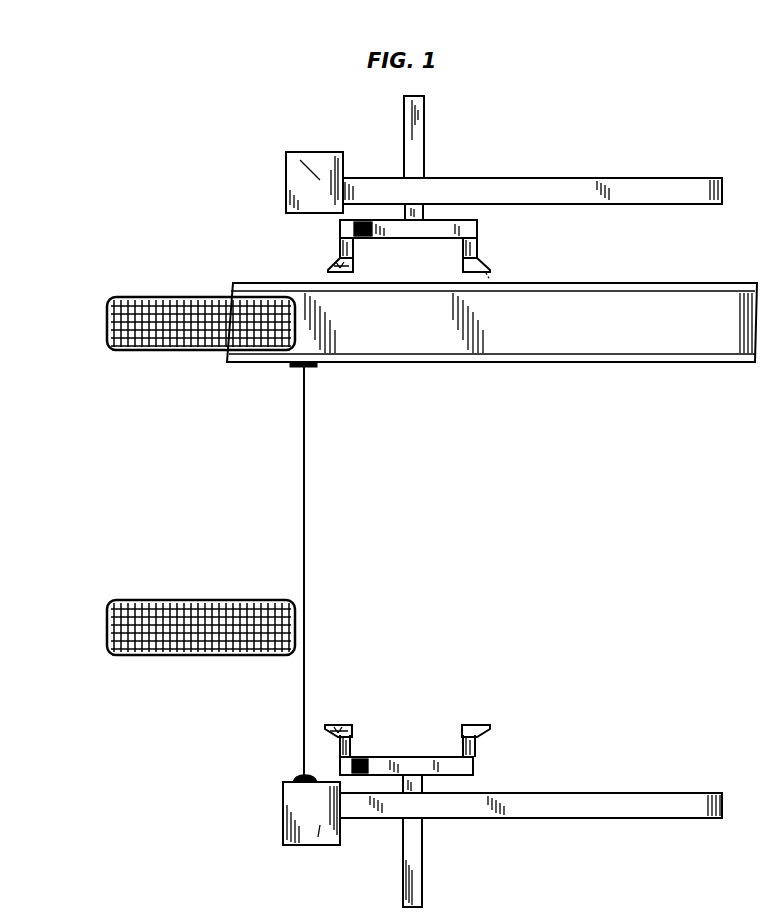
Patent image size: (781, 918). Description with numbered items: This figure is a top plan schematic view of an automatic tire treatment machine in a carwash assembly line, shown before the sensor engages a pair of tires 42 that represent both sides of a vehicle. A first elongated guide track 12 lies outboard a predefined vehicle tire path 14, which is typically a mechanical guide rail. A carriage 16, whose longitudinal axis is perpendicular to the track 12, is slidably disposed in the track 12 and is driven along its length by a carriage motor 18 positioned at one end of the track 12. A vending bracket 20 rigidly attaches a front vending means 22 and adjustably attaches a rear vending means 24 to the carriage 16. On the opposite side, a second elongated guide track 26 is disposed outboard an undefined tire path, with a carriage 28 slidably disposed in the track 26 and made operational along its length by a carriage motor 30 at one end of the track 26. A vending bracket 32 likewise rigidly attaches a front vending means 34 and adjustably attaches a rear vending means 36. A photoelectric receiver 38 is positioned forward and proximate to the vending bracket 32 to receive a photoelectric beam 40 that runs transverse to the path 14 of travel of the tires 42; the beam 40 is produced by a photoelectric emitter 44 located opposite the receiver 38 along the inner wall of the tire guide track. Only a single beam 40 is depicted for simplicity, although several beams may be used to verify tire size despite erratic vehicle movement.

The first elongated guide track 12 is at (685, 195).
The predefined vehicle tire path 14 is at (488, 363).
The carriage 16 is at (420, 105).
The carriage motor 18 is at (292, 152).
The vending bracket 20 is at (396, 250).
The front vending means 22 is at (495, 295).
The rear vending means 24 is at (327, 264).
The second elongated guide track 26 is at (628, 812).
The carriage 28 is at (422, 895).
The carriage motor 30 is at (318, 840).
The vending bracket 32 is at (434, 731).
The front vending means 34 is at (477, 723).
The rear vending means 36 is at (343, 722).
The photoelectric receiver 38 is at (292, 778).
The photoelectric beam 40 is at (302, 470).
The tires 42 is at (140, 350).
The photoelectric emitter 44 is at (312, 368).